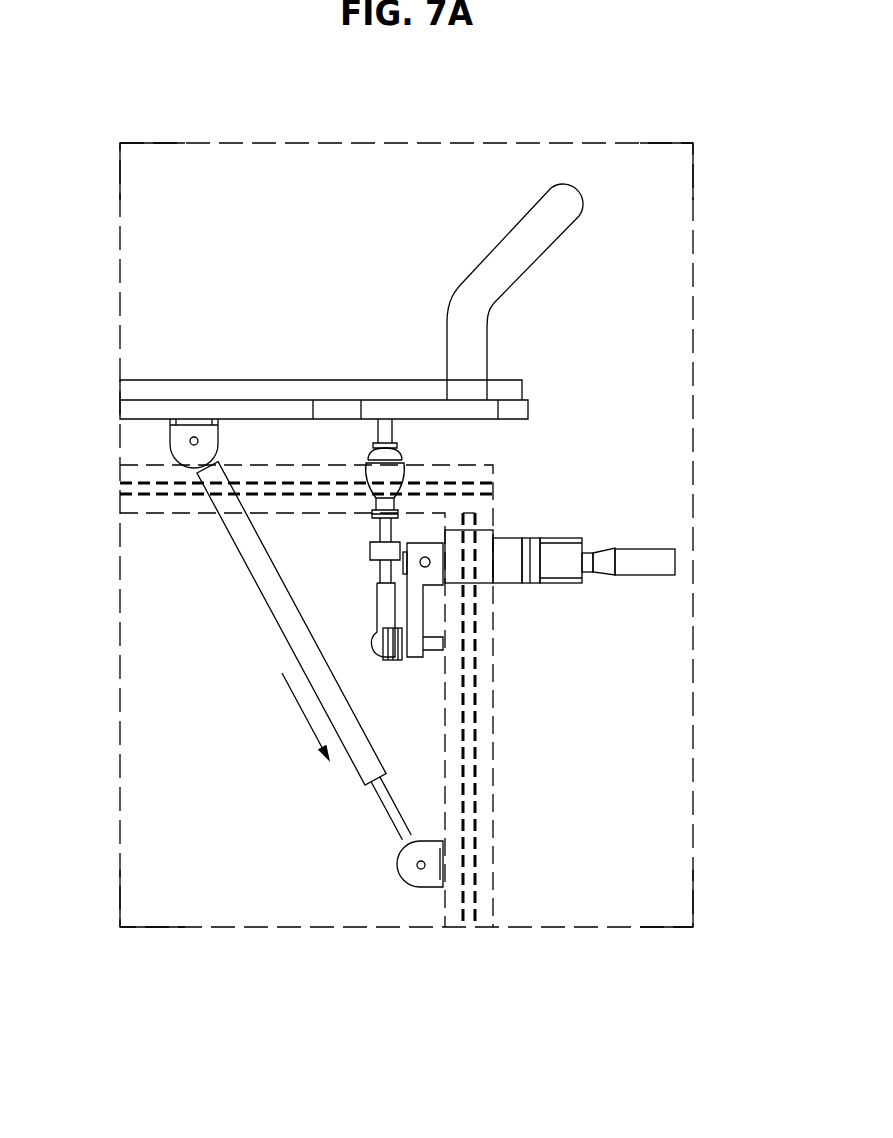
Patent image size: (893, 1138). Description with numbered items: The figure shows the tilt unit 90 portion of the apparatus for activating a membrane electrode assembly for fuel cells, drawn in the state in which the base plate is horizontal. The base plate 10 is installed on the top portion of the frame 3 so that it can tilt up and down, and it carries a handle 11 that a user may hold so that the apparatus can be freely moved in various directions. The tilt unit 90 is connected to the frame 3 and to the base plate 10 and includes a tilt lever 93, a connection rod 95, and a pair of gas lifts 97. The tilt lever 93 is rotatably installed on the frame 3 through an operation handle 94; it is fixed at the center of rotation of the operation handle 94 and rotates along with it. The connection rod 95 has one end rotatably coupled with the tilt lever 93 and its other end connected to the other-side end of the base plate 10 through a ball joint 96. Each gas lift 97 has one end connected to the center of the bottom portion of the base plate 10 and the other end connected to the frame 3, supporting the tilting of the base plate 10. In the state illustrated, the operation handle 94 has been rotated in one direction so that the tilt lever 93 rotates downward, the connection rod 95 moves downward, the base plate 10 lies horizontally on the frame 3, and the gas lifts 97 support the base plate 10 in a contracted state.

The tilt unit 90 is at (422, 104).
The base plate 10 is at (150, 412).
The handle 11 is at (560, 210).
The ball joint 96 is at (395, 473).
The connection rod 95 is at (383, 600).
The tilt lever 93 is at (417, 615).
The operation handle 94 is at (662, 562).
The gas lift 97 is at (250, 553).
The frame 3 is at (497, 752).